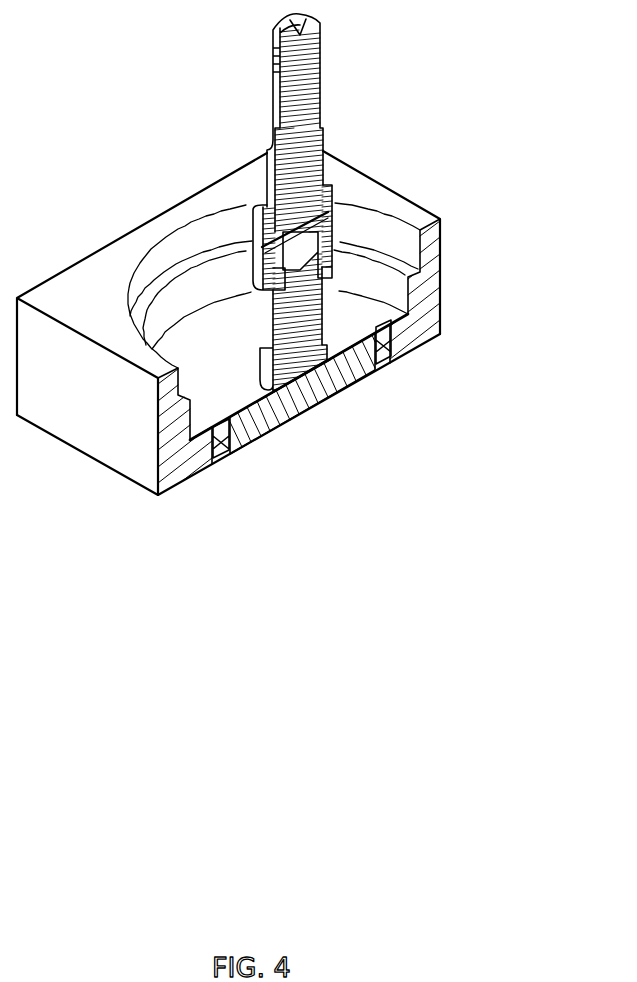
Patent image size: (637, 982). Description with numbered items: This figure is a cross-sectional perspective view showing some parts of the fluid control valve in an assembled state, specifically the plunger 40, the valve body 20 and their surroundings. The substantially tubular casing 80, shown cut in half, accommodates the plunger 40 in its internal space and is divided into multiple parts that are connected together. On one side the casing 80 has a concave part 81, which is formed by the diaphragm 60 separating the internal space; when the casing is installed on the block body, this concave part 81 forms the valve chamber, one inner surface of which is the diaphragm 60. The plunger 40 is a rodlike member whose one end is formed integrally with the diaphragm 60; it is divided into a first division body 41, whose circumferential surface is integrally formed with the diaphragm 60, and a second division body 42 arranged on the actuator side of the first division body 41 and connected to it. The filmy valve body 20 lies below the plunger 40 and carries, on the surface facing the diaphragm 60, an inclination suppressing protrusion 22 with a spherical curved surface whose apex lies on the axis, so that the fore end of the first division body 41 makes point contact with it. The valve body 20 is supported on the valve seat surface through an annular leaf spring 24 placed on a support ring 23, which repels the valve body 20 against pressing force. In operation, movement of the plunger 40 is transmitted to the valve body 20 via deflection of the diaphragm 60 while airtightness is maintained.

The valve body 20 is at (349, 386).
The inclination suppressing protrusion 22 is at (305, 383).
The support ring 23 is at (391, 363).
The leaf spring 24 is at (225, 455).
The plunger 40 is at (382, 203).
The first division body 41 is at (336, 252).
The second division body 42 is at (333, 131).
The diaphragm 60 is at (225, 412).
The casing 80 is at (440, 290).
The concave part 81 is at (440, 335).